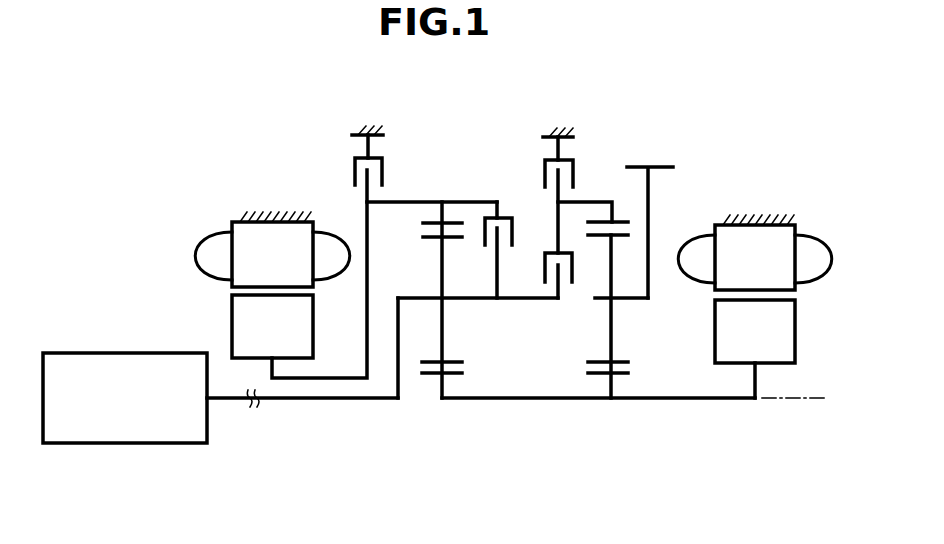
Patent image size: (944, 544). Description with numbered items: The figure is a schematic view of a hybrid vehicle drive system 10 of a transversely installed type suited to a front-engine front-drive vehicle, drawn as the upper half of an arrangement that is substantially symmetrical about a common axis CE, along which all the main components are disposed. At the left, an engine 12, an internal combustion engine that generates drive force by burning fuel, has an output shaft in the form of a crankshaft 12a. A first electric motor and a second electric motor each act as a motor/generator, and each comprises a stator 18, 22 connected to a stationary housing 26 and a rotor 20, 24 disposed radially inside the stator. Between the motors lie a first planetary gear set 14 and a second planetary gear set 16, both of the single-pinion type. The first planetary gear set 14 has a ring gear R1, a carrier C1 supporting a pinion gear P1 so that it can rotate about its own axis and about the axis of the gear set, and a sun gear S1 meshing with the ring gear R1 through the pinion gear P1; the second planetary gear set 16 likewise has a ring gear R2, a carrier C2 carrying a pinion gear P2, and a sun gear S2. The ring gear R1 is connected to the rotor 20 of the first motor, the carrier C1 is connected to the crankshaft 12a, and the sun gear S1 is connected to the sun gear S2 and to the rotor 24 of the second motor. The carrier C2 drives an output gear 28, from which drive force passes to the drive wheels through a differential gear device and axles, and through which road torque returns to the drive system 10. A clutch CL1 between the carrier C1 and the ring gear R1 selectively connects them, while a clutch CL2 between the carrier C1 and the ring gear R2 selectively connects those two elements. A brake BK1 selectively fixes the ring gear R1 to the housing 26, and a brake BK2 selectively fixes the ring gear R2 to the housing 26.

The hybrid vehicle drive system 10 is at (744, 106).
The engine 12 is at (82, 360).
The crankshaft 12a is at (241, 400).
The first planetary gear set 14 is at (571, 333).
The second planetary gear set 16 is at (614, 322).
The stator 18 is at (235, 281).
The rotor 20 is at (232, 327).
The stator 22 is at (792, 286).
The rotor 24 is at (790, 330).
The housing 26 is at (368, 133).
The output gear 28 is at (658, 166).
The brake BK1 is at (355, 170).
The brake BK2 is at (545, 172).
The clutch CL1 is at (513, 229).
The clutch CL2 is at (543, 262).
The ring gear R1 is at (430, 222).
The ring gear R2 is at (615, 222).
The carrier C1 is at (462, 298).
The carrier C2 is at (625, 300).
The pinion gear P1 is at (452, 362).
The pinion gear P2 is at (605, 362).
The sun gear S1 is at (455, 373).
The sun gear S2 is at (622, 373).
The common axis CE is at (808, 399).